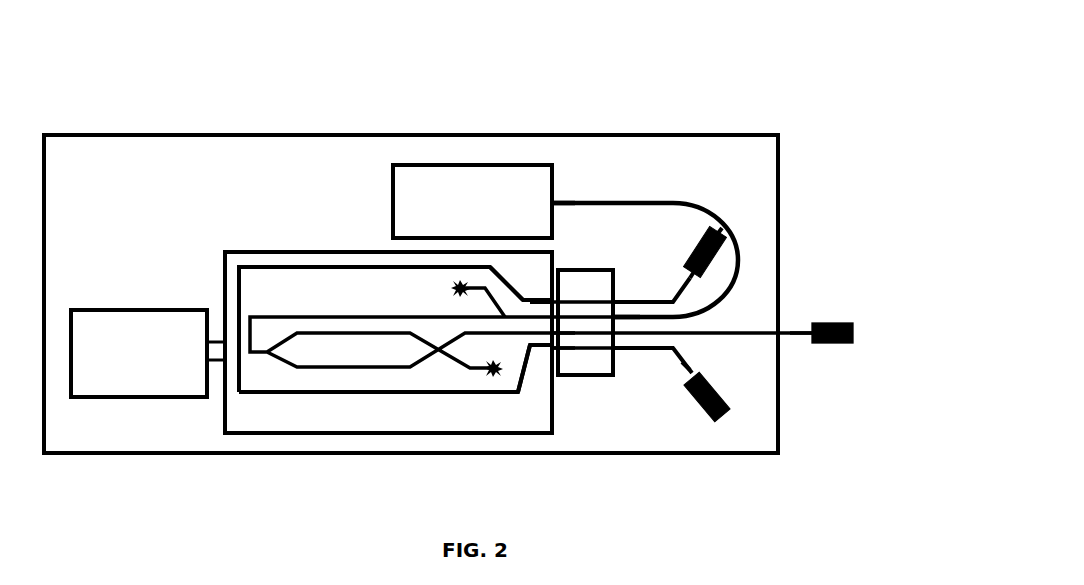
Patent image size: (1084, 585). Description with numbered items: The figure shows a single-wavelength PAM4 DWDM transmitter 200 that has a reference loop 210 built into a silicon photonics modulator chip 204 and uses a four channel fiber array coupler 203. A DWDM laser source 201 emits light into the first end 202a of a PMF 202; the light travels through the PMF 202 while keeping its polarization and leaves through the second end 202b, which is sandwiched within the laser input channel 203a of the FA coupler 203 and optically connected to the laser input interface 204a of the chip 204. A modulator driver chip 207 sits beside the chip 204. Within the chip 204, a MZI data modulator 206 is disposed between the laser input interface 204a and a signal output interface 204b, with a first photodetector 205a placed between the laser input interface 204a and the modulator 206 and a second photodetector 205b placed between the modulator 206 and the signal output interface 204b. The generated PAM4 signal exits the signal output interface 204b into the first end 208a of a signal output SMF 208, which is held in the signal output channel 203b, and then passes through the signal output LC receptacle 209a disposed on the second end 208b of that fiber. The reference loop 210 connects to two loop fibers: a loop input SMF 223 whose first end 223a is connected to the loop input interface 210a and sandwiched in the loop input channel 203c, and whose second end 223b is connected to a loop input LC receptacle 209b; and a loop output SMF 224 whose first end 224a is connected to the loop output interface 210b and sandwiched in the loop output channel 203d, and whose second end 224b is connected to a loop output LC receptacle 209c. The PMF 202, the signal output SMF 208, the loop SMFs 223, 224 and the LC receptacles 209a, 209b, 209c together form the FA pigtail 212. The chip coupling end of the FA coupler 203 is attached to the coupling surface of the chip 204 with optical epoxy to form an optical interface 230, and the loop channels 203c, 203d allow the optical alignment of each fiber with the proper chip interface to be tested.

The PAM4 DWDM transmitter 200 is at (206, 113).
The DWDM laser source 201 is at (393, 167).
The PMF 202 is at (692, 207).
The first end of PMF 202a is at (555, 201).
The second end of PMF 202b is at (577, 300).
The four channel fiber array coupler 203 is at (611, 241).
The laser input channel 203a is at (615, 297).
The signal output channel 203b is at (644, 377).
The loop input channel 203c is at (612, 278).
The loop output channel 203d is at (603, 374).
The silicon photonics modulator chip 204 is at (224, 252).
The laser input interface 204a is at (539, 312).
The signal output interface 204b is at (533, 313).
The first photodetector 205a is at (440, 282).
The second photodetector 205b is at (475, 380).
The MZI data modulator 206 is at (280, 378).
The modulator driver chip 207 is at (147, 308).
The signal output SMF 208 is at (767, 332).
The first end of signal output SMF 208a is at (573, 375).
The second end of signal output SMF 208b is at (805, 326).
The signal output LC receptacle 209a is at (853, 332).
The loop input LC receptacle 209b is at (722, 232).
The loop output LC receptacle 209c is at (723, 410).
The reference loop 210 is at (279, 261).
The loop input interface 210a is at (544, 309).
The loop output interface 210b is at (549, 352).
The fiber array pigtail 212 is at (687, 375).
The loop input SMF 223 is at (693, 283).
The first end of loop input SMF 223a is at (565, 270).
The second end of loop input SMF 223b is at (723, 258).
The loop output SMF 224 is at (680, 350).
The first end of loop output SMF 224a is at (563, 374).
The second end of loop output SMF 224b is at (694, 376).
The optical interface 230 is at (550, 381).